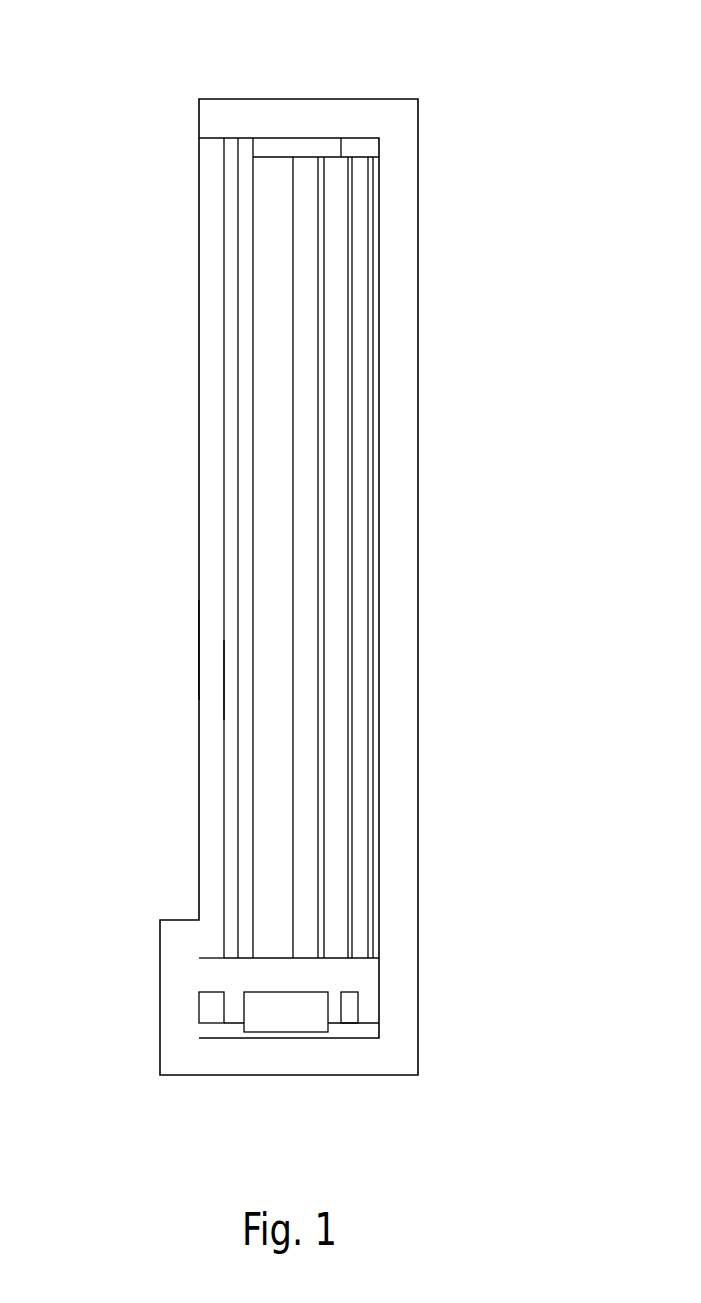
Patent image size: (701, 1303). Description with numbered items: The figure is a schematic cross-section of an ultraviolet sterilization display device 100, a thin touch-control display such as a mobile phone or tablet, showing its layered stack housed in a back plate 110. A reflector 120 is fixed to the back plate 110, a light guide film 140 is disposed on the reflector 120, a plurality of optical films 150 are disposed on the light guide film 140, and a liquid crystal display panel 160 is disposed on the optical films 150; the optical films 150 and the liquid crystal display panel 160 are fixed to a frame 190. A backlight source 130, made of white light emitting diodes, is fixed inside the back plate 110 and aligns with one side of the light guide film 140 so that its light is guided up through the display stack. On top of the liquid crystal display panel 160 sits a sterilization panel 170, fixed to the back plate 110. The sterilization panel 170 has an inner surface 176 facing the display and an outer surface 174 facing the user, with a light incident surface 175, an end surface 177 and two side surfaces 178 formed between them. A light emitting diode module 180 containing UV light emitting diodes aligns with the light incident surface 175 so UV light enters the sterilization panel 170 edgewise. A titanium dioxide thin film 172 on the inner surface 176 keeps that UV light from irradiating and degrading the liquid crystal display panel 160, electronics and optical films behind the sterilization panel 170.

The ultraviolet sterilization display device 100 is at (130, 55).
The back plate 110 is at (400, 405).
The reflector 120 is at (368, 350).
The backlight source 130 is at (352, 1017).
The light guide film 140 is at (350, 295).
The optical films 150 is at (320, 237).
The liquid crystal display panel 160 is at (273, 432).
The sterilization panel 170 is at (210, 553).
The titanium dioxide thin film 172 is at (232, 493).
The outer surface 174 is at (198, 638).
The light incident surface 175 is at (213, 958).
The inner surface 176 is at (225, 673).
The end surface 177 is at (215, 139).
The side surfaces 178 is at (210, 710).
The light emitting diode module 180 is at (213, 1007).
The frame 190 is at (282, 1017).